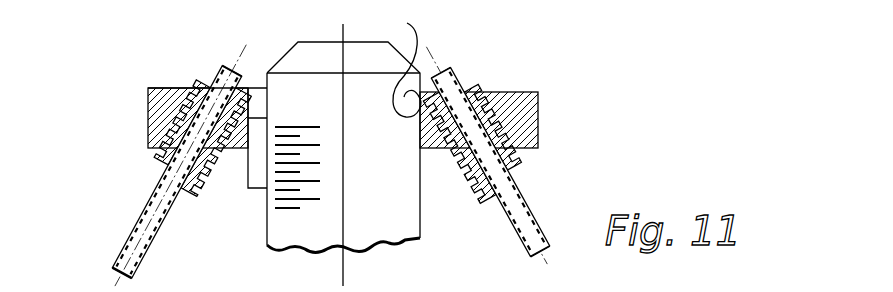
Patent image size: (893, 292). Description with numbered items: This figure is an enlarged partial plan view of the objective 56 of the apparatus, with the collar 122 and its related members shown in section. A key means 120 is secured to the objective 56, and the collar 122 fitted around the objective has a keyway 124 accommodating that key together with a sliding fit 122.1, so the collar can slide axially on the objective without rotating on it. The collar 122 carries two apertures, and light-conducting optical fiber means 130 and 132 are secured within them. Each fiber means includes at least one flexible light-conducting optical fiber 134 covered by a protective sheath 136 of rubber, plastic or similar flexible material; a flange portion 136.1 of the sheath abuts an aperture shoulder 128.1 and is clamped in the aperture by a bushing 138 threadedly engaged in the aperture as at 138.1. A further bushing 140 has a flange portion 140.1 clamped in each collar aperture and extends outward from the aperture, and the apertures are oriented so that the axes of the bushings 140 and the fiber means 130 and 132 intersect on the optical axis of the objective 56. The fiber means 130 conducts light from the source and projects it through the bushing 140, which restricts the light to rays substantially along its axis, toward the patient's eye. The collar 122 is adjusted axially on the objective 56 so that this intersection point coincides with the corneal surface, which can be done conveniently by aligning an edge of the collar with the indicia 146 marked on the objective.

The objective 56 is at (413, 242).
The key means 120 is at (253, 192).
The collar 122 is at (148, 133).
The sliding fit 122.1 is at (395, 65).
The keyway 124 is at (258, 97).
The aperture shoulder 128.1 is at (197, 88).
The optical fiber means 130 is at (108, 262).
The optical fiber means 132 is at (503, 205).
The optical fiber 134 is at (131, 232).
The protective sheath 136 is at (150, 190).
The flange portion 136.1 is at (192, 49).
The bushing 138 is at (158, 160).
The threaded engagement 138.1 is at (164, 89).
The bushing 140 is at (478, 53).
The flange portion 140.1 is at (203, 90).
The indicia 146 is at (283, 211).